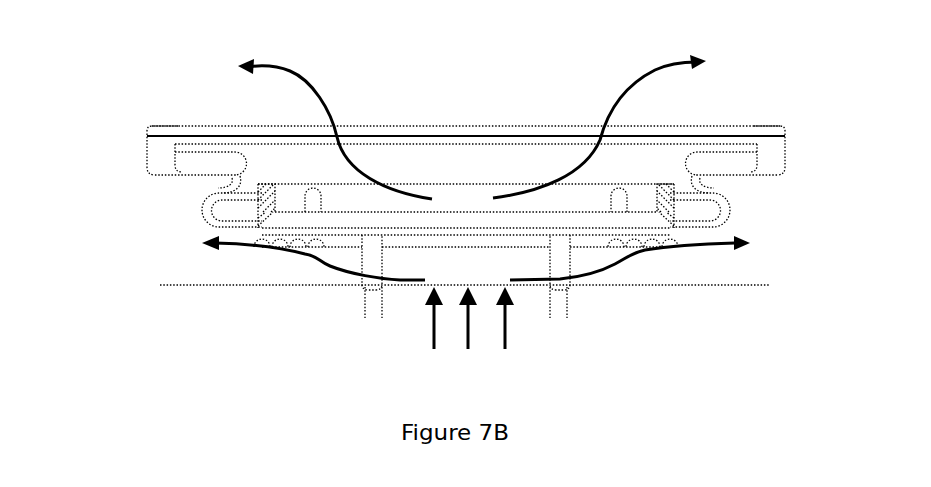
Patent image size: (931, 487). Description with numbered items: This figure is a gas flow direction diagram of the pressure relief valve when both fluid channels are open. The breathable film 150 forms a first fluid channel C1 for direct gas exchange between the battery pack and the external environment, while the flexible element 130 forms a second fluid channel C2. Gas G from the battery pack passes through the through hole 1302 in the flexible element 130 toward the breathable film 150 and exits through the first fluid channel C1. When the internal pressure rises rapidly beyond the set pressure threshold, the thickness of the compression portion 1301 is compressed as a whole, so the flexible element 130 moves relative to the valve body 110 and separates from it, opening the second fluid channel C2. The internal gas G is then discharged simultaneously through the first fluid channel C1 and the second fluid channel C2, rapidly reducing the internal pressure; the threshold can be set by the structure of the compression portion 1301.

The valve body 110 is at (760, 285).
The flexible element 130 is at (182, 110).
The compression portion 1301 is at (170, 208).
The through hole 1302 is at (478, 224).
The breathable film 150 is at (672, 136).
The first fluid channel C1 is at (462, 110).
The second fluid channel C2 is at (453, 258).
The gas G is at (469, 332).